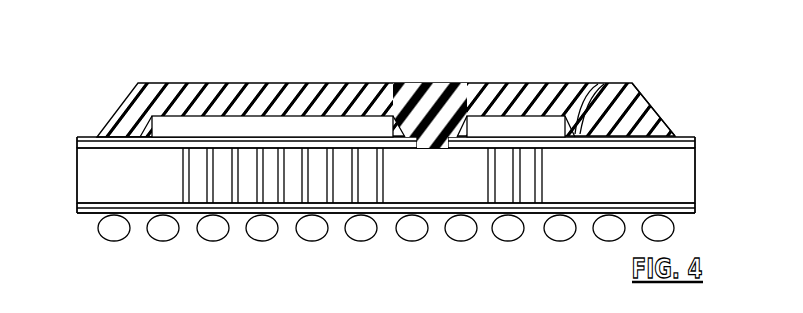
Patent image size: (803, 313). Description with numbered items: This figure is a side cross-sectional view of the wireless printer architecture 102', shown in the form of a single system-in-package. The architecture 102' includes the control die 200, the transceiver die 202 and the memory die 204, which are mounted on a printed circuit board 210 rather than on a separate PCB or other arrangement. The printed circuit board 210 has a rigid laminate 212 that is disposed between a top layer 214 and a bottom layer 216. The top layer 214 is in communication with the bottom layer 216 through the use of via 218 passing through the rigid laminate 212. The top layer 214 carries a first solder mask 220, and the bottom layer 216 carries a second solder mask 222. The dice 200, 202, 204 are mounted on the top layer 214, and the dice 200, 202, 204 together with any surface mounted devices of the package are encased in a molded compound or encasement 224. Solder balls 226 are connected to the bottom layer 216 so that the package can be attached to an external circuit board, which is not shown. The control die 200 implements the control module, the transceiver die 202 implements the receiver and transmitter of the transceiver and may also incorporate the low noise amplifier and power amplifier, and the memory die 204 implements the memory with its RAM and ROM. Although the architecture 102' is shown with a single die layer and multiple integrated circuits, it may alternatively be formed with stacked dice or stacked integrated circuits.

The wireless printer architecture 102' is at (411, 115).
The control die 200 is at (277, 83).
The transceiver die 202 is at (598, 83).
The memory die 204 is at (598, 113).
The printed circuit board 210 is at (697, 137).
The rigid laminate 212 is at (690, 172).
The top layer 214 is at (77, 142).
The bottom layer 216 is at (77, 208).
The via 218 is at (360, 162).
The first solder mask 220 is at (92, 136).
The second solder mask 222 is at (690, 212).
The molded compound 224 is at (467, 88).
The solder balls 226 is at (413, 241).